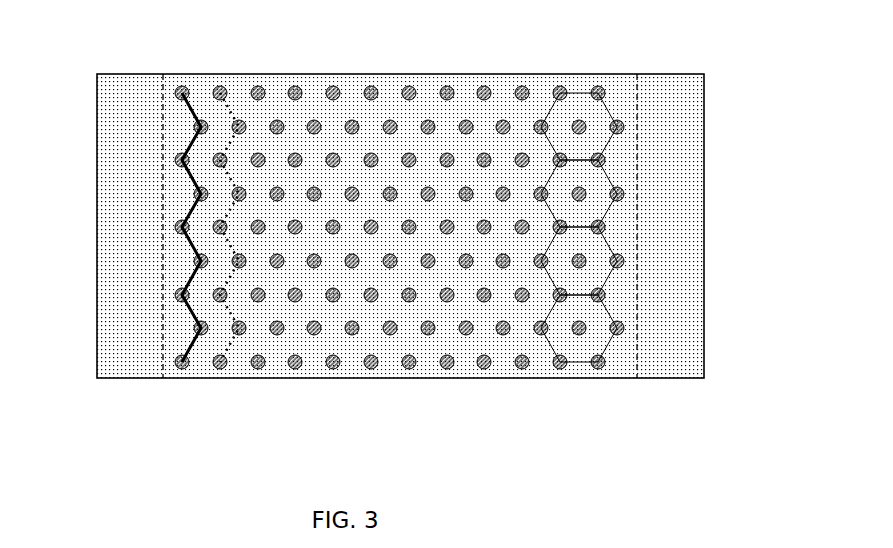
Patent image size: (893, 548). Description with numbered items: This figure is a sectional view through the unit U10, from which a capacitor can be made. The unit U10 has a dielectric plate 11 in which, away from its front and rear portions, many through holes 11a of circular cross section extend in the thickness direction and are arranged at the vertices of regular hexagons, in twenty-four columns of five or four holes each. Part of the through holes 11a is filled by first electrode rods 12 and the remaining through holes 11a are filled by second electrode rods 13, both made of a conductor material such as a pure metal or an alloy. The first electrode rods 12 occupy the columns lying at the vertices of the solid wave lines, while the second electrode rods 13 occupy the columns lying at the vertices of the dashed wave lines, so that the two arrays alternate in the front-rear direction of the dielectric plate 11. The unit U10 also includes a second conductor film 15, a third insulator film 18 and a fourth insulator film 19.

The unit U10 is at (120, 69).
The dielectric plate 11 is at (108, 193).
The through holes 11a is at (169, 157).
The first electrode rods 12 is at (178, 85).
The second electrode rods 13 is at (216, 85).
The second conductor film 15 is at (620, 98).
The third insulator film 18 is at (97, 242).
The fourth insulator film 19 is at (700, 225).